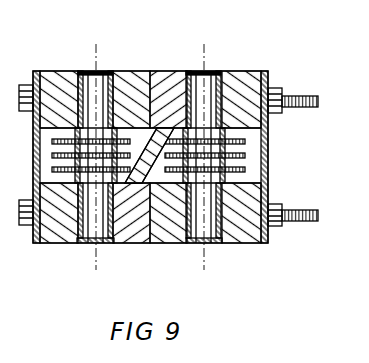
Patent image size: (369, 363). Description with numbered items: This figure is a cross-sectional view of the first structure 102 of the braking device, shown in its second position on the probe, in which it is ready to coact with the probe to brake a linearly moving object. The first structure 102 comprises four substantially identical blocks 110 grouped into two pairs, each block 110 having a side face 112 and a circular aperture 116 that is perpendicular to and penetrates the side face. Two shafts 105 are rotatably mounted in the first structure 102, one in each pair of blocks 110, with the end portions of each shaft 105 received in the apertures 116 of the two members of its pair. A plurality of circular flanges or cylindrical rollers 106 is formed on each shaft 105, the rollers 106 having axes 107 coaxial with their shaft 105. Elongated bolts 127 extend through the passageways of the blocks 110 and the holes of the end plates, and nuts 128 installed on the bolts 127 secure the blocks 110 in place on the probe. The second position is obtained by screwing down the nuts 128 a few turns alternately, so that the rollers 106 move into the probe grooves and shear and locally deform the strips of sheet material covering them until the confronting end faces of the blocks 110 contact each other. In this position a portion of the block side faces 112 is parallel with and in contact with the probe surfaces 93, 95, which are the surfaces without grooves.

The first structure 102 is at (251, 70).
The block 110 is at (241, 246).
The roller axis 107 is at (95, 63).
The circular aperture 116 is at (203, 71).
The shaft 105 is at (88, 245).
The cylindrical roller 106 is at (246, 143).
The probe surface 95 is at (135, 128).
The probe surface 93 is at (140, 186).
The side face 112 is at (153, 186).
The elongated bolt 127 is at (298, 107).
The nut 128 is at (282, 92).